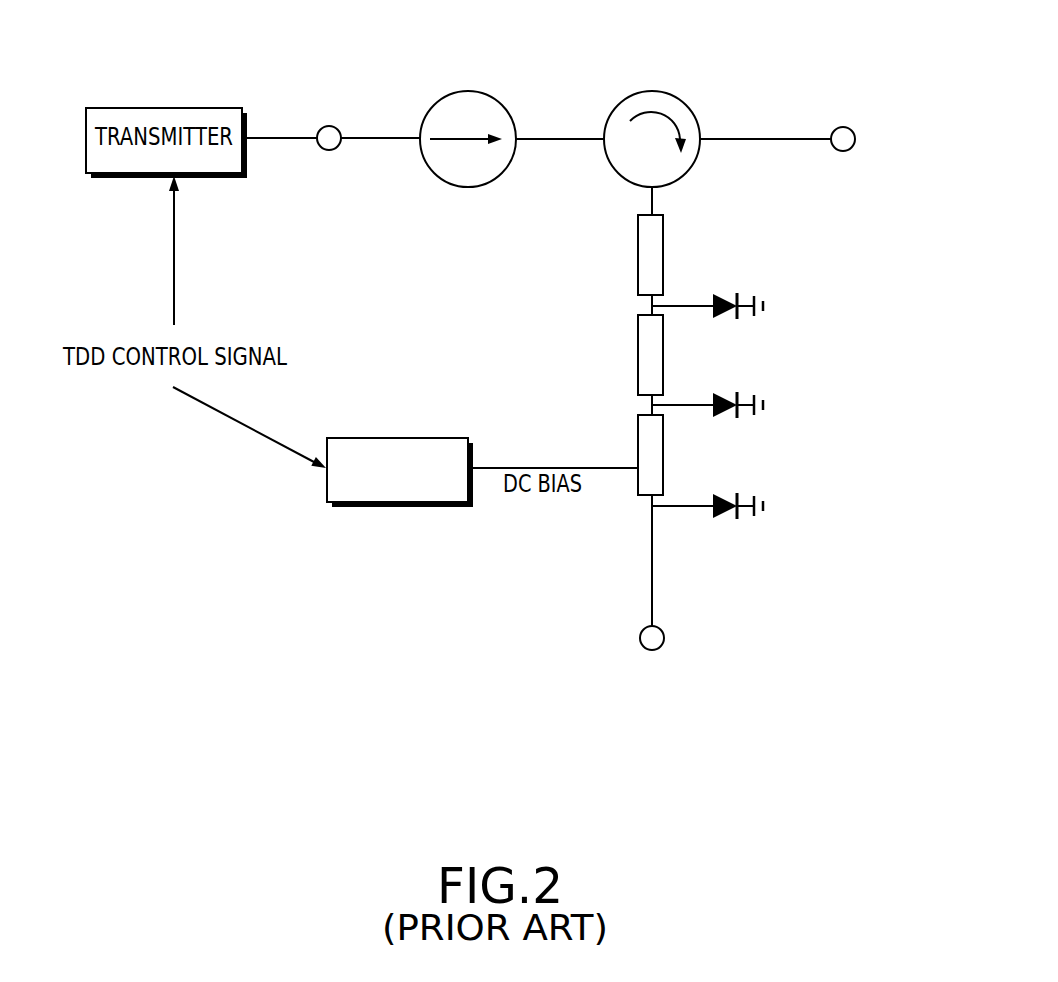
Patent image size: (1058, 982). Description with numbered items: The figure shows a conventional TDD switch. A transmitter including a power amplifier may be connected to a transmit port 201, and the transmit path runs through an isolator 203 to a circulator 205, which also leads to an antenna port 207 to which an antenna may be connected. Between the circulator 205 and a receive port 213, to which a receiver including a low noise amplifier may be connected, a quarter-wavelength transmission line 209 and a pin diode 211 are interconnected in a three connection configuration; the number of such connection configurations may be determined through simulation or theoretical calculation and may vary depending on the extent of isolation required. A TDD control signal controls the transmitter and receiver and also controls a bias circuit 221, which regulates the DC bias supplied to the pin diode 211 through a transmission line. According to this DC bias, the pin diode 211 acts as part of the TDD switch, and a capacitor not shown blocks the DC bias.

The transmit port 201 is at (328, 169).
The isolator 203 is at (471, 105).
The circulator 205 is at (654, 105).
The antenna port 207 is at (841, 169).
The λ/4 transmission line 209 is at (607, 444).
The pin diode 211 is at (778, 498).
The receive port 213 is at (697, 652).
The bias circuit 221 is at (400, 472).